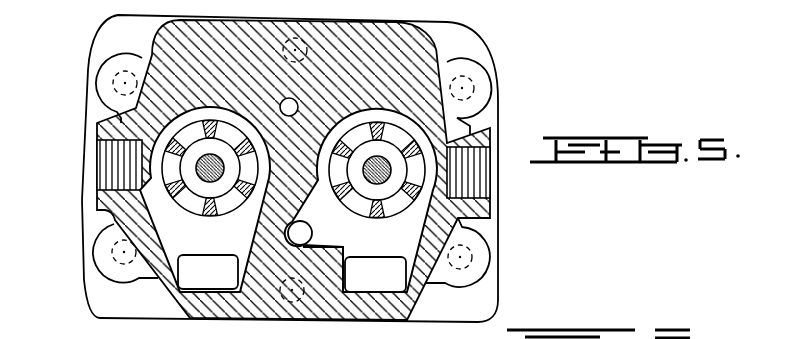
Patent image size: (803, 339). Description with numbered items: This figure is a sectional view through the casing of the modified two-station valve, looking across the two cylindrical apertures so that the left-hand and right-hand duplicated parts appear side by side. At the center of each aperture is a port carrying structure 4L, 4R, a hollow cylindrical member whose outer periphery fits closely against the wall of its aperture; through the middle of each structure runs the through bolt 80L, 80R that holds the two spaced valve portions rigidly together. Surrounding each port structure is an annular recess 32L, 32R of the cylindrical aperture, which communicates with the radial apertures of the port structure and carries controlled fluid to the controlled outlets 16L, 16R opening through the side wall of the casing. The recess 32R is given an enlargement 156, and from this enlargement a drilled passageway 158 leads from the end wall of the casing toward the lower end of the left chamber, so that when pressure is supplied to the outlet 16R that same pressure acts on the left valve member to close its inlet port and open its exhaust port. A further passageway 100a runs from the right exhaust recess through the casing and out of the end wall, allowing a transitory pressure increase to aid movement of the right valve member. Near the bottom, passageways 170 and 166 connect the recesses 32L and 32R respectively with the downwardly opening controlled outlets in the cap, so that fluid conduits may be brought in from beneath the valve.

The port carrying structure 4L is at (189, 101).
The port carrying structure 4R is at (383, 113).
The through bolt 80L is at (214, 166).
The through bolt 80R is at (376, 170).
The passageway 100a is at (297, 101).
The controlled outlet 16L is at (96, 186).
The controlled outlet 16R is at (484, 197).
The annular recess 32L is at (233, 248).
The annular recess 32R is at (361, 200).
The enlargement 156 is at (330, 219).
The passageway 158 is at (312, 234).
The passageway 170 is at (208, 288).
The passageway 166 is at (380, 292).